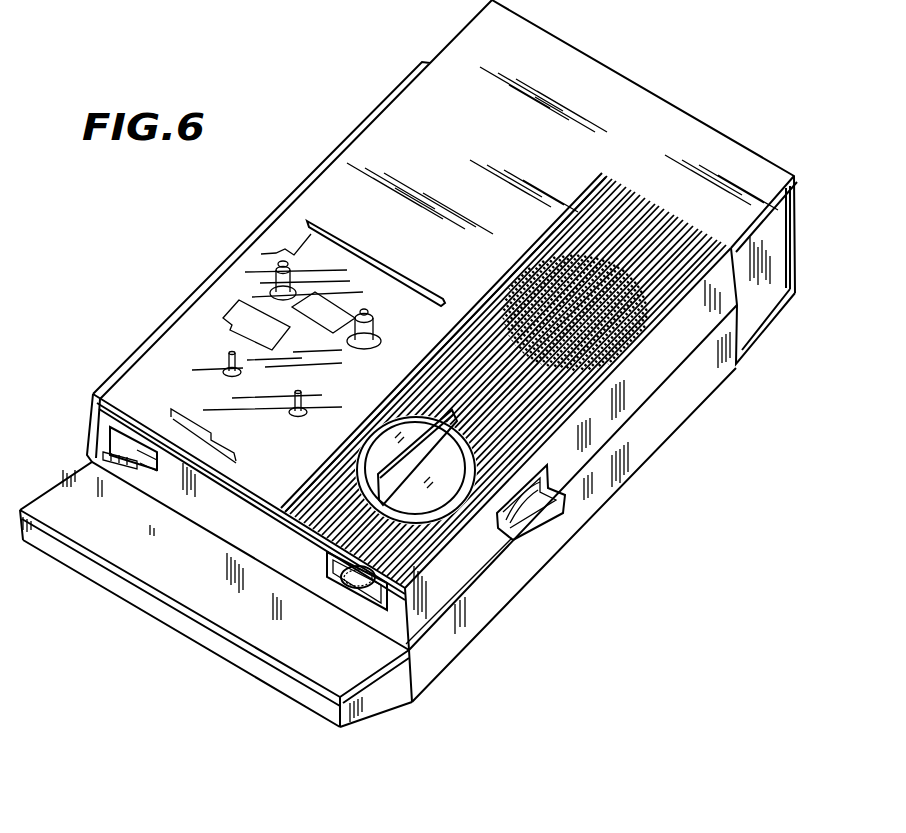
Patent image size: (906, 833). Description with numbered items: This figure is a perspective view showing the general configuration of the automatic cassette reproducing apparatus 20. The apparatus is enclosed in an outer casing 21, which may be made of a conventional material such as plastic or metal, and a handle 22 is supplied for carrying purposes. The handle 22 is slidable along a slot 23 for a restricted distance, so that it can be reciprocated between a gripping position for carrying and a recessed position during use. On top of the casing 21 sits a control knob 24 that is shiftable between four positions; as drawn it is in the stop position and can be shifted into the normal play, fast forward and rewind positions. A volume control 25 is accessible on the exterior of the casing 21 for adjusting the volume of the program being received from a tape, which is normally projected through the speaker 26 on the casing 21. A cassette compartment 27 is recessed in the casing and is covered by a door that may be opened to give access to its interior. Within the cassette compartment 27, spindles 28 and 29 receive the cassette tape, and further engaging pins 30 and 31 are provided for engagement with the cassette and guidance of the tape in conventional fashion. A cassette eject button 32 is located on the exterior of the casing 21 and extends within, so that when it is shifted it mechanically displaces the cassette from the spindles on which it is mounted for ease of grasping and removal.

The automatic cassette reproducing apparatus 20 is at (341, 97).
The outer casing 21 is at (457, 637).
The handle 22 is at (299, 704).
The slot 23 is at (528, 536).
The control knob 24 is at (443, 483).
The volume control 25 is at (358, 590).
The speaker 26 is at (603, 345).
The cassette compartment 27 is at (283, 443).
The spindle 28 is at (285, 290).
The spindle 29 is at (368, 310).
The engaging pin 30 is at (231, 366).
The engaging pin 31 is at (300, 402).
The cassette eject button 32 is at (125, 458).